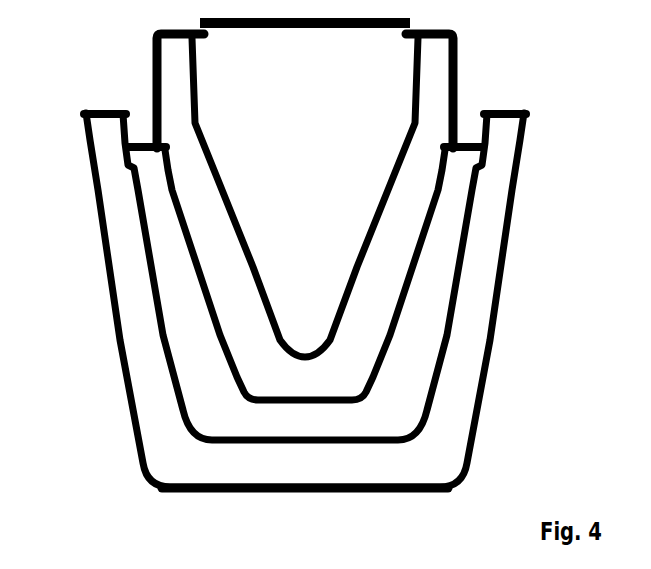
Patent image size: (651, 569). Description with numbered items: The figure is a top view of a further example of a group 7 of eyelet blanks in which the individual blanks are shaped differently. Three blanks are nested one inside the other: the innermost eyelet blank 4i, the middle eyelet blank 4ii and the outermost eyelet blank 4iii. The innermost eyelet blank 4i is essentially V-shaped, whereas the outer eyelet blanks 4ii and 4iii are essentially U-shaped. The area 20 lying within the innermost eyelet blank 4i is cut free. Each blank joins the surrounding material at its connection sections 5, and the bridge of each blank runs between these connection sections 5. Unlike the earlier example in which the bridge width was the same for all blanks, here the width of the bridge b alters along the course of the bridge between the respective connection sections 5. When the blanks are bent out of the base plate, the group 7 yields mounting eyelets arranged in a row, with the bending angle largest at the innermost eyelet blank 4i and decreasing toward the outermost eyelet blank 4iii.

The innermost eyelet blank 4i is at (228, 275).
The middle eyelet blank 4ii is at (202, 332).
The outermost eyelet blank 4iii is at (163, 412).
The connection sections 5 is at (152, 142).
The group of eyelet blanks 7 is at (550, 295).
The area within the innermost eyelet blank 20 is at (318, 123).
The width of the bridge b is at (398, 292).